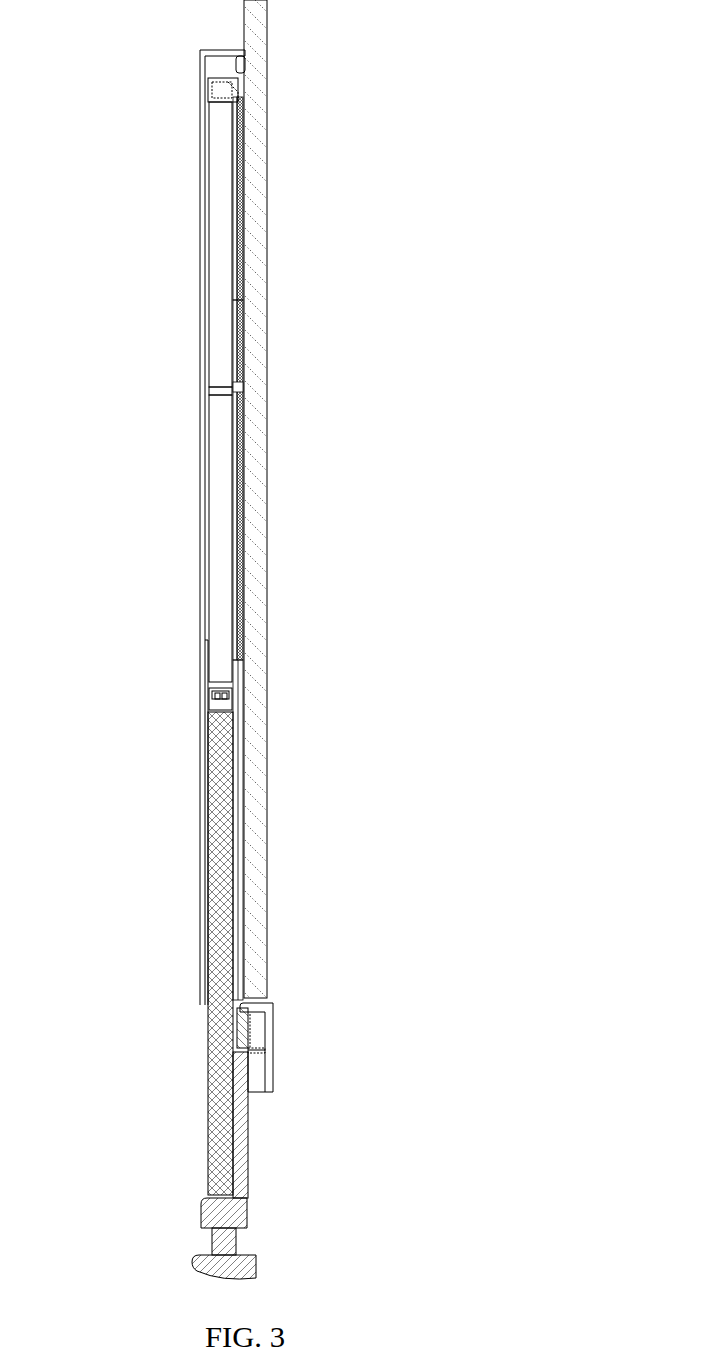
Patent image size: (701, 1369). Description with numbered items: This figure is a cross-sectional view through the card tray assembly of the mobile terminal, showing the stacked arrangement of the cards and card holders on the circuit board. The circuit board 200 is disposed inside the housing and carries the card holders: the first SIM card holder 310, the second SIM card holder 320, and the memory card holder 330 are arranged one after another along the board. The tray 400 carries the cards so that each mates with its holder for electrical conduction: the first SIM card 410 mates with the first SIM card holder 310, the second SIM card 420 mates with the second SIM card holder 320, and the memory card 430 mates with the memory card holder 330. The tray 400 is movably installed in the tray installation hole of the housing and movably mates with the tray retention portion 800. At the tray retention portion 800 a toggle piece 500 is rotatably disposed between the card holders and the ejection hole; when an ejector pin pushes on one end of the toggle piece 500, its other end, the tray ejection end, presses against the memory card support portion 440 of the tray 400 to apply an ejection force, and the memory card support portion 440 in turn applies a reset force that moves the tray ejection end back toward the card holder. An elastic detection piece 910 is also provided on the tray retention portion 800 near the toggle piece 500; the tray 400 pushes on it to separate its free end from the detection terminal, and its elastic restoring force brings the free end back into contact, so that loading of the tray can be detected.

The circuit board 200 is at (258, 347).
The first SIM card holder 310 is at (237, 238).
The second SIM card holder 320 is at (240, 538).
The memory card holder 330 is at (240, 876).
The first SIM card 410 is at (217, 271).
The second SIM card 420 is at (219, 508).
The memory card 430 is at (220, 833).
The memory card support portion 440 is at (240, 1115).
The tray 400 is at (236, 1212).
The toggle piece 500 is at (245, 1031).
The tray retention portion 800 is at (272, 1008).
The elastic detection piece 910 is at (253, 1045).